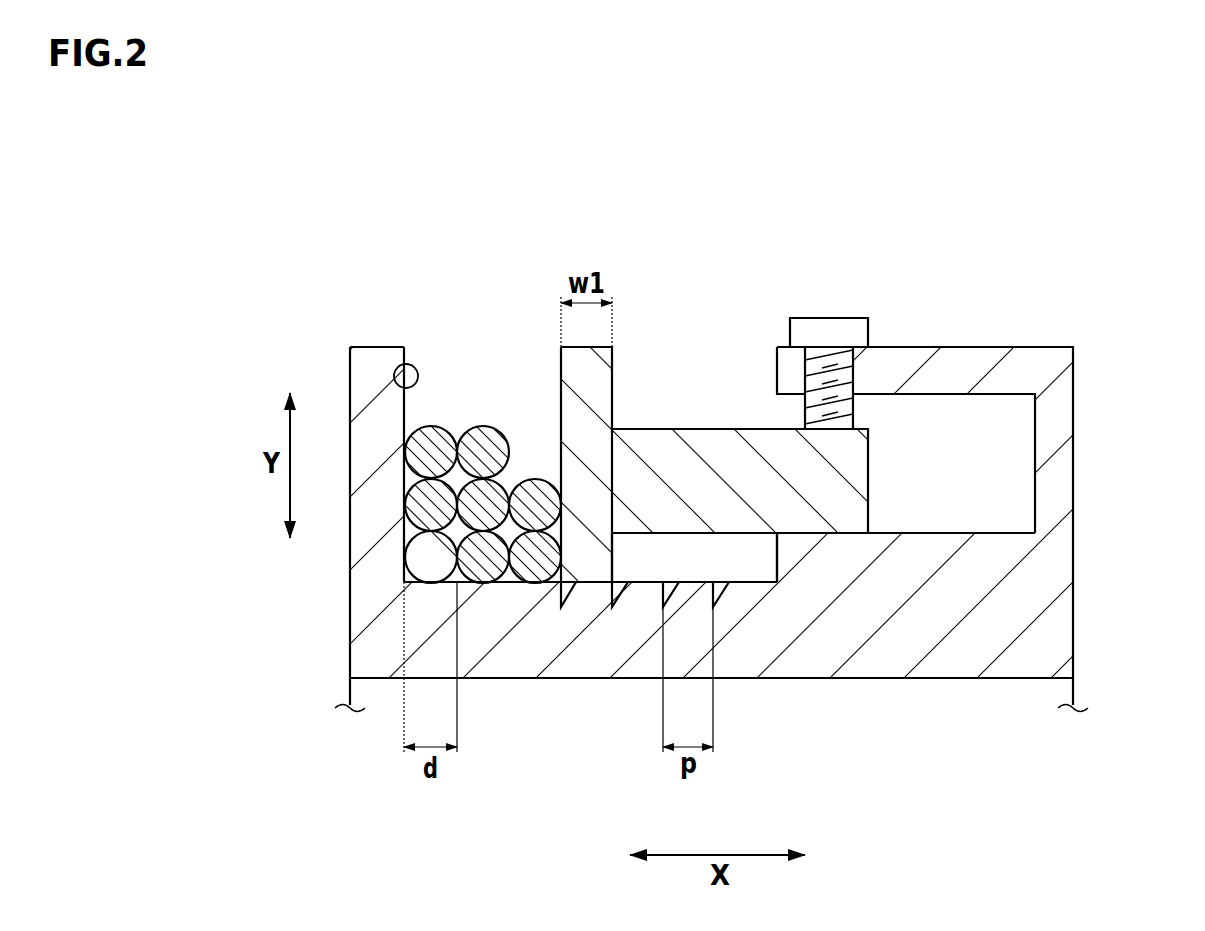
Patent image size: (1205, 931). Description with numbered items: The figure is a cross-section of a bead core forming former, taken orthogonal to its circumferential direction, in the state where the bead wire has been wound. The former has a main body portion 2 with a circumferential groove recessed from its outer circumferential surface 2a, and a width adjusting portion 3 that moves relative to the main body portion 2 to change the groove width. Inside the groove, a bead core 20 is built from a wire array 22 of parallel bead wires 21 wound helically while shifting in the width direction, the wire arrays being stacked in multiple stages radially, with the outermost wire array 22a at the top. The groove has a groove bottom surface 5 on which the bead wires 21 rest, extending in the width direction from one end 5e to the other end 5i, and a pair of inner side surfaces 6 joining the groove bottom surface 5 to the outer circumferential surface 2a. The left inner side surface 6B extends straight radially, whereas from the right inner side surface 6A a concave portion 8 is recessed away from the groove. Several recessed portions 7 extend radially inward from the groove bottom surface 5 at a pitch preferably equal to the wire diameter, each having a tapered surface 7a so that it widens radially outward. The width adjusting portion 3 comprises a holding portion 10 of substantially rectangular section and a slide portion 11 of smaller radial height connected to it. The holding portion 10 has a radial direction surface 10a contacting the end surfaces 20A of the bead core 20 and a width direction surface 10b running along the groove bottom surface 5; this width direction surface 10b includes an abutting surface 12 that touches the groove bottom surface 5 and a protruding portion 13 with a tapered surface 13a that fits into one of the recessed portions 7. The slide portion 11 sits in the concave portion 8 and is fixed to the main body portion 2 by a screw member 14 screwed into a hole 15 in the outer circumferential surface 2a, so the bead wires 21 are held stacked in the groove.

The main body portion 2 is at (1048, 375).
The outer circumferential surface 2a is at (367, 347).
The width adjusting portion 3 is at (870, 463).
The groove bottom surface 5 is at (518, 582).
The one end 5e is at (405, 582).
The other end 5i is at (778, 582).
The inner side surfaces 6 is at (502, 308).
The inner side surface 6A is at (777, 372).
The inner side surface 6B is at (394, 384).
The recessed portion 7 is at (718, 590).
The tapered surface 7a is at (724, 586).
The concave portion 8 is at (967, 397).
The holding portion 10 is at (690, 534).
The radial direction surface 10a is at (561, 397).
The width direction surface 10b is at (653, 773).
The slide portion 11 is at (717, 430).
The abutting surface 12 is at (596, 582).
The protruding portion 13 is at (566, 596).
The tapered surface 13a is at (573, 585).
The screw member 14 is at (830, 318).
The hole 15 is at (853, 378).
The bead core 20 is at (440, 429).
The bead wire 21 is at (440, 450).
The end surface 20A is at (563, 497).
The wire array 22 is at (427, 507).
The wire array 22a is at (431, 450).